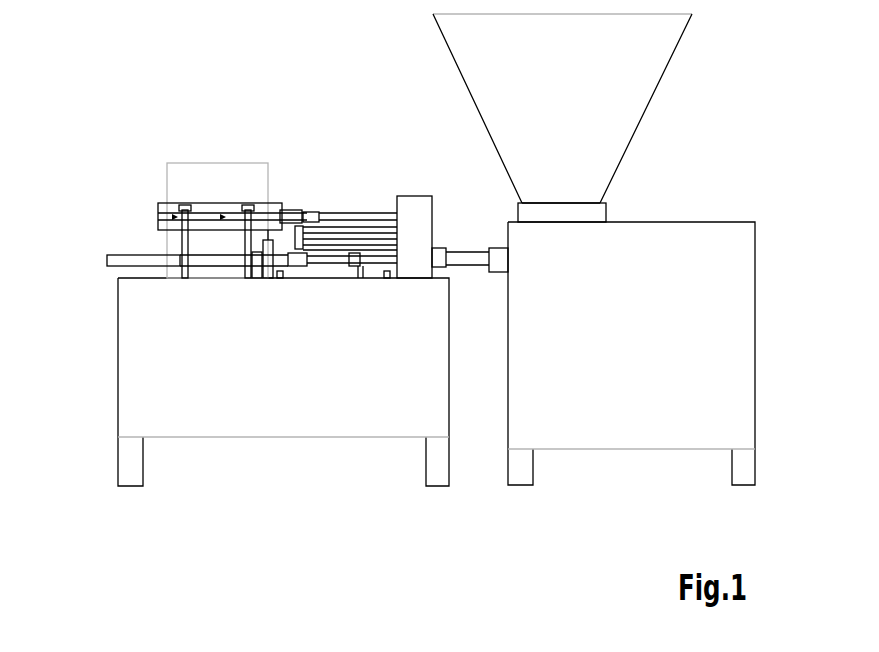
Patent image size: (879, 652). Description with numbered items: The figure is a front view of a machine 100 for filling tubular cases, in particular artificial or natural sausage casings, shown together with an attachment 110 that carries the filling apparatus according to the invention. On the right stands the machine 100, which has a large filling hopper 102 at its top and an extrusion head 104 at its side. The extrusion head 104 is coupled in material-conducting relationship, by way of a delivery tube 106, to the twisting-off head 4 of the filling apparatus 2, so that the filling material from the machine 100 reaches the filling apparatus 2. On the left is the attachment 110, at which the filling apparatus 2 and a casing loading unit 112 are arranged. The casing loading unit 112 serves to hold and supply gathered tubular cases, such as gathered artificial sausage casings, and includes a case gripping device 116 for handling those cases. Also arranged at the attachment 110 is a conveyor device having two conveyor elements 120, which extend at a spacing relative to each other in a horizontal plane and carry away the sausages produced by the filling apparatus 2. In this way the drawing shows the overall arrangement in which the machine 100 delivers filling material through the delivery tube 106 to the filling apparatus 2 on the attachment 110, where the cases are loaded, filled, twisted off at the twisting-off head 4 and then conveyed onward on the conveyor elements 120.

The filling apparatus 2 is at (352, 182).
The twisting-off head 4 is at (415, 215).
The machine 100 is at (700, 133).
The filling hopper 102 is at (665, 40).
The extrusion head 104 is at (493, 250).
The delivery tube 106 is at (467, 258).
The attachment 110 is at (168, 112).
The casing loading unit 112 is at (279, 184).
The case gripping device 116 is at (212, 196).
The conveyor elements 120 is at (137, 258).